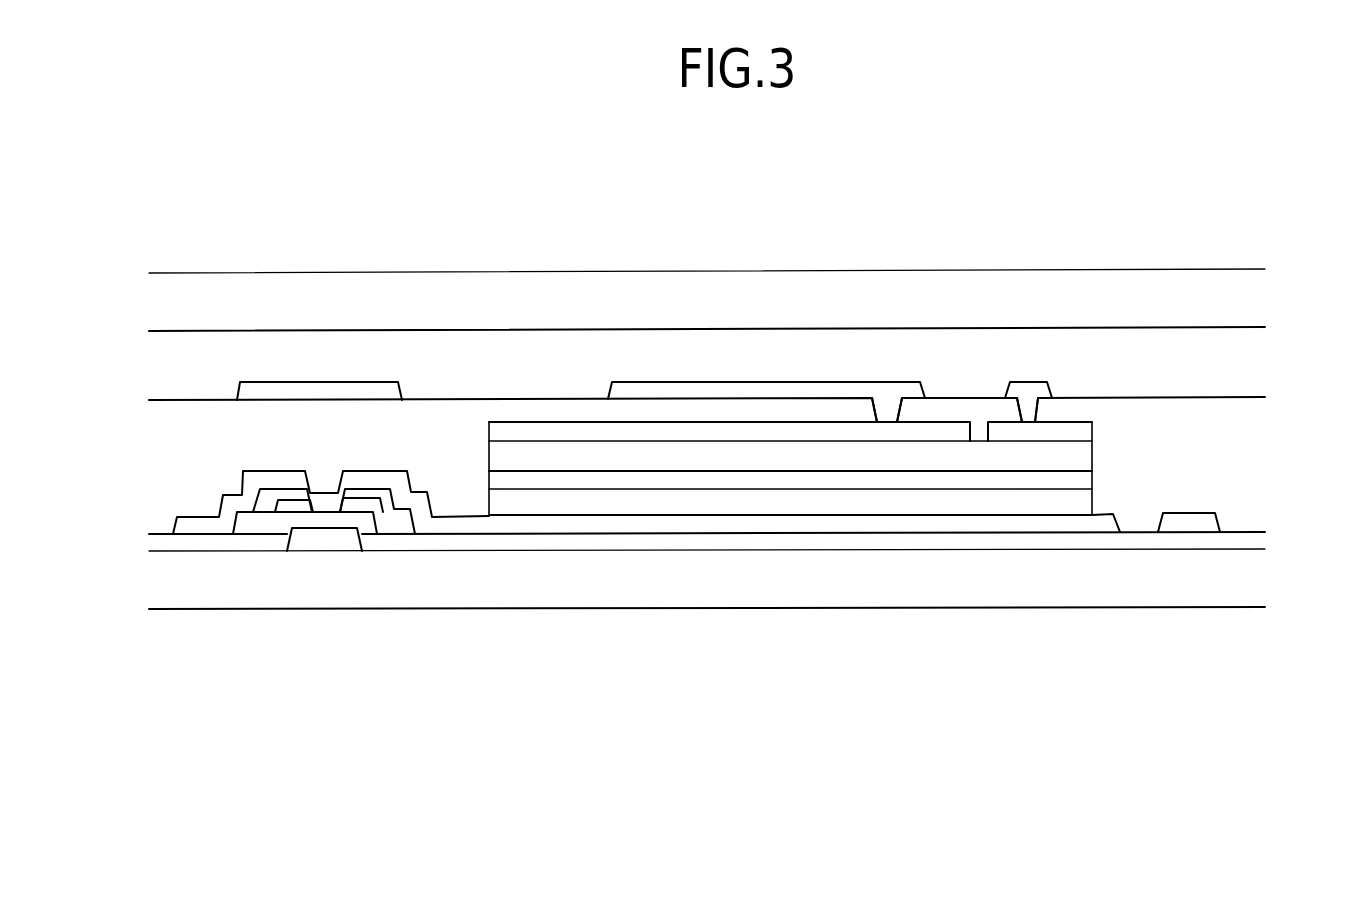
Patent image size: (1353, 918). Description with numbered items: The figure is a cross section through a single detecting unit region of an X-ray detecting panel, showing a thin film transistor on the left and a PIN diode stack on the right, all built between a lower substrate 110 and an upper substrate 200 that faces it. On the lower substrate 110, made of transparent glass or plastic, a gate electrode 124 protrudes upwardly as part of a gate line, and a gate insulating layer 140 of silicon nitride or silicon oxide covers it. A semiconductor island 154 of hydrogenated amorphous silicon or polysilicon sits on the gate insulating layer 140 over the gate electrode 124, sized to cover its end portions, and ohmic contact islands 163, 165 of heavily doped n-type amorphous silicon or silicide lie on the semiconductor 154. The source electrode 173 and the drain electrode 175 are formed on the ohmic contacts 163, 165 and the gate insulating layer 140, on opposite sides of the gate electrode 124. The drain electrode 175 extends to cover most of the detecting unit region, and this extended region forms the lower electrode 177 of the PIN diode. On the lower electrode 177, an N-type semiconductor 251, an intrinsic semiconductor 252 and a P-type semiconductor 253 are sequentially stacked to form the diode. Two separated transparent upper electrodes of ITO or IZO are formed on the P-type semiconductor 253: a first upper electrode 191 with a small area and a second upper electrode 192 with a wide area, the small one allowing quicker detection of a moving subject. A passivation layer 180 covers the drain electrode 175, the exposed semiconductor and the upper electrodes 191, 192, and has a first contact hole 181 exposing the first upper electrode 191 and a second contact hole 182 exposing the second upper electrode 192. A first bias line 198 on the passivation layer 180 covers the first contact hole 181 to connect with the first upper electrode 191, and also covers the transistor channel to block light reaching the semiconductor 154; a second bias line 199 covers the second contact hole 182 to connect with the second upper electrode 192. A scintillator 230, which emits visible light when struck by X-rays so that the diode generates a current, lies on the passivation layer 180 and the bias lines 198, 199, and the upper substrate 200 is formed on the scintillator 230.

The lower substrate 110 is at (1253, 578).
The gate electrode 124 is at (312, 540).
The gate insulating layer 140 is at (1253, 543).
The semiconductor island 154 is at (353, 502).
The ohmic contact island 163 is at (248, 517).
The ohmic contact island 165 is at (403, 517).
The source electrode 173 is at (195, 527).
The drain electrode 175 is at (371, 481).
The lower electrode 177 is at (588, 523).
The passivation layer 180 is at (175, 468).
The first contact hole 181 is at (1034, 413).
The second contact hole 182 is at (900, 408).
The first upper electrode 191 is at (1038, 432).
The second upper electrode 192 is at (915, 432).
The first bias line 198 is at (317, 392).
The second bias line 199 is at (823, 390).
The upper substrate 200 is at (1253, 296).
The scintillator 230 is at (1253, 360).
The N-type semiconductor 251 is at (657, 502).
The intrinsic semiconductor 252 is at (724, 483).
The P-type semiconductor 253 is at (788, 457).